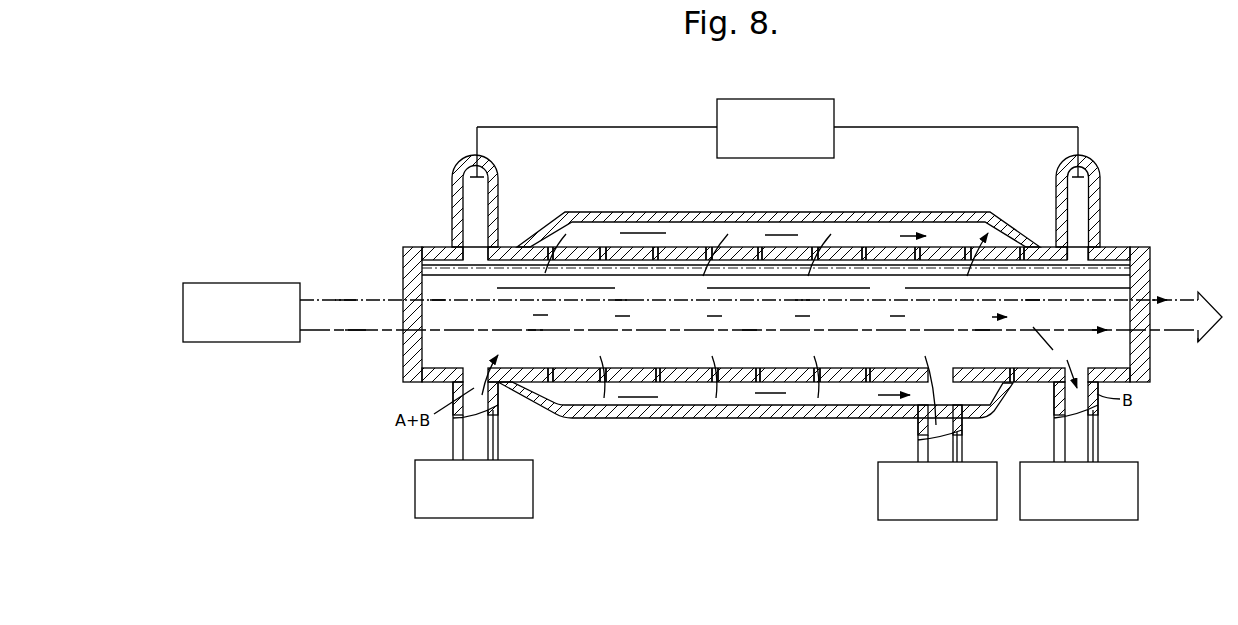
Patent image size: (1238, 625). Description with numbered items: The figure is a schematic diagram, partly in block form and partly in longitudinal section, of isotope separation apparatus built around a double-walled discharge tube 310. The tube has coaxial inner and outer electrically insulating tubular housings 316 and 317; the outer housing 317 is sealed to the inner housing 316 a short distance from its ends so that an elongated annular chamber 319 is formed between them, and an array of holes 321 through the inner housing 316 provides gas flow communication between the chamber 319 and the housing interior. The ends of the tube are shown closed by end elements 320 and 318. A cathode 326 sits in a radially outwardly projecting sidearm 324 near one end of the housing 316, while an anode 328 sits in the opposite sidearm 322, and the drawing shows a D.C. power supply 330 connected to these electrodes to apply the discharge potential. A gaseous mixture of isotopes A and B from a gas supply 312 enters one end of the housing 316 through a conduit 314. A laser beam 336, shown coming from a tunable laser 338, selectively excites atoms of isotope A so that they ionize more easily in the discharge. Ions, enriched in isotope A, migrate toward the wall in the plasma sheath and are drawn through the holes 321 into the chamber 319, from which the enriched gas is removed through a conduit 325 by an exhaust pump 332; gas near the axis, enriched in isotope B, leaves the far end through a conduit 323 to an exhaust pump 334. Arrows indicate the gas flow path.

The double-walled discharge tube 310 is at (761, 276).
The gas supply 312 is at (533, 518).
The conduit 314 is at (500, 445).
The inner tubular housing 316 is at (895, 264).
The outer tubular housing 317 is at (899, 212).
The right end window 318 is at (1151, 273).
The annular chamber 319 is at (759, 226).
The left end window 320 is at (405, 249).
The holes 321 is at (663, 257).
The sidearm 322 is at (1109, 193).
The conduit 323 is at (1100, 448).
The sidearm 324 is at (476, 193).
The conduit 325 is at (918, 453).
The cathode 326 is at (466, 172).
The anode 328 is at (1091, 191).
The D.C. power supply 330 is at (832, 102).
The exhaust pump 332 is at (880, 521).
The exhaust pump 334 is at (1139, 521).
The laser beam 336 is at (332, 332).
The tunable laser 338 is at (183, 343).